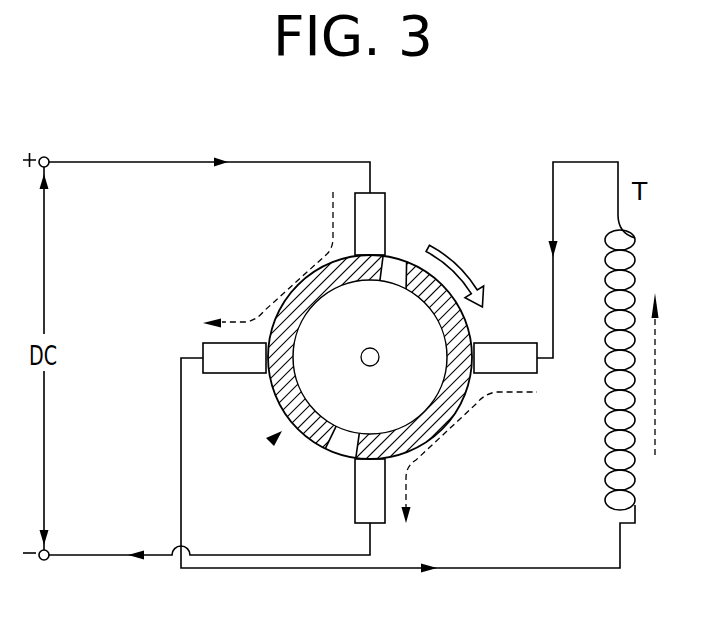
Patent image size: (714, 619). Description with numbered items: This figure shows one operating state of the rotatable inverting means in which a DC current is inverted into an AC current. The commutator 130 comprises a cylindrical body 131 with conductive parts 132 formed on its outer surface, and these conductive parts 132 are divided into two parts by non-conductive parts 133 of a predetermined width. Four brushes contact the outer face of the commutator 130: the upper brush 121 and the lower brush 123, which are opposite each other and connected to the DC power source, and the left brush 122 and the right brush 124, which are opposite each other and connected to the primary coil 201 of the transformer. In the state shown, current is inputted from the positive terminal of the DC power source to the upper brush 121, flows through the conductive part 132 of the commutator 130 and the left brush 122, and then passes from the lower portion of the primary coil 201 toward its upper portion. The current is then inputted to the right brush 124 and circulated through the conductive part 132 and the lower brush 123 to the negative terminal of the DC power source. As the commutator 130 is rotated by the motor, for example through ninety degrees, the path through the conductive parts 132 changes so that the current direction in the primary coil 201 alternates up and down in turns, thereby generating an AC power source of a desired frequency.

The upper brush 121 is at (373, 199).
The left brush 122 is at (220, 366).
The lower brush 123 is at (360, 496).
The right brush 124 is at (529, 364).
The commutator 130 is at (276, 437).
The cylindrical body 131 is at (323, 312).
The conductive part 132 is at (462, 270).
The non-conductive part 133 is at (395, 268).
The primary coil 201 is at (608, 489).